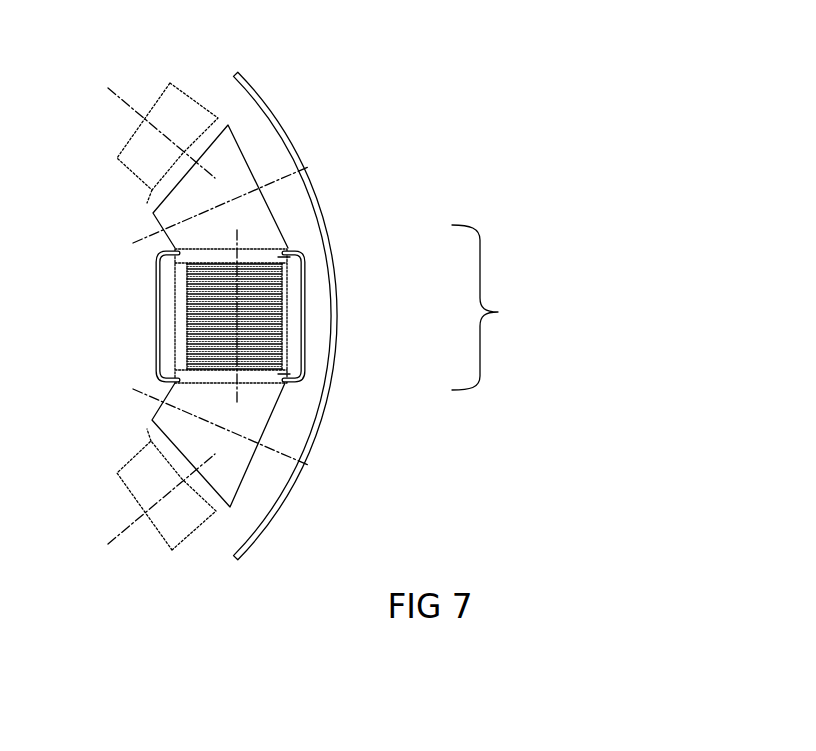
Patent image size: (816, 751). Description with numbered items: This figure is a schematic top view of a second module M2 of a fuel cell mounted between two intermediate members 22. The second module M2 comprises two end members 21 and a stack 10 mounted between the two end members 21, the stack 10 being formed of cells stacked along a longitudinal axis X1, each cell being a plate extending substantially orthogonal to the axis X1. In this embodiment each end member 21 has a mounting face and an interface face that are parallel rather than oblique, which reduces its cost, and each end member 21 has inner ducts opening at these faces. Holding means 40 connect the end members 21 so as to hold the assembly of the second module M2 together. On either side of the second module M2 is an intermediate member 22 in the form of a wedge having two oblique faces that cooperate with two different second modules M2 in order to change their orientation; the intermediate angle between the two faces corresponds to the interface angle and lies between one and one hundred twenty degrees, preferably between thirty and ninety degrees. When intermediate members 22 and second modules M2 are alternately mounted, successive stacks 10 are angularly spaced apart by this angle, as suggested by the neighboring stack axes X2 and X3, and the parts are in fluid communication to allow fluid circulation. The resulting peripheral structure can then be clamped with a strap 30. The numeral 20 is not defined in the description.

The stack 10 is at (176, 100).
The stator core tooth 20 is at (250, 155).
The end member 21 is at (236, 125).
The intermediate member 22 is at (263, 222).
The strap 30 is at (240, 82).
The holding means 40 is at (158, 307).
The longitudinal axis X1 is at (235, 320).
The section line X2 is at (142, 499).
The section line X3 is at (152, 133).
The second module M2 is at (499, 307).